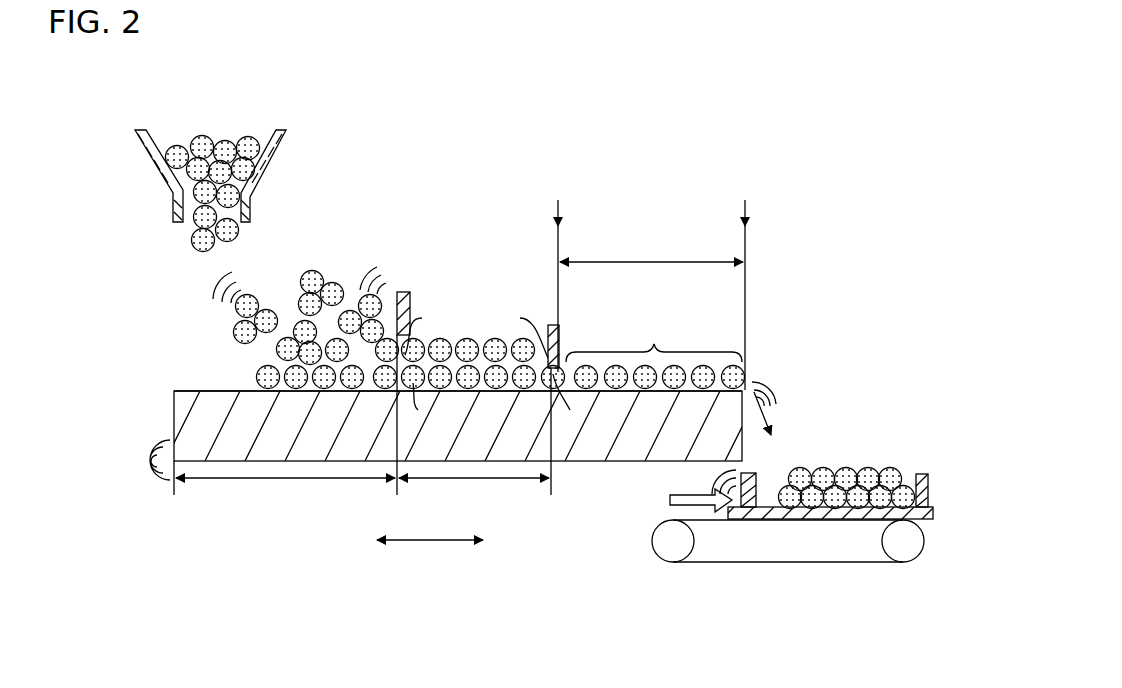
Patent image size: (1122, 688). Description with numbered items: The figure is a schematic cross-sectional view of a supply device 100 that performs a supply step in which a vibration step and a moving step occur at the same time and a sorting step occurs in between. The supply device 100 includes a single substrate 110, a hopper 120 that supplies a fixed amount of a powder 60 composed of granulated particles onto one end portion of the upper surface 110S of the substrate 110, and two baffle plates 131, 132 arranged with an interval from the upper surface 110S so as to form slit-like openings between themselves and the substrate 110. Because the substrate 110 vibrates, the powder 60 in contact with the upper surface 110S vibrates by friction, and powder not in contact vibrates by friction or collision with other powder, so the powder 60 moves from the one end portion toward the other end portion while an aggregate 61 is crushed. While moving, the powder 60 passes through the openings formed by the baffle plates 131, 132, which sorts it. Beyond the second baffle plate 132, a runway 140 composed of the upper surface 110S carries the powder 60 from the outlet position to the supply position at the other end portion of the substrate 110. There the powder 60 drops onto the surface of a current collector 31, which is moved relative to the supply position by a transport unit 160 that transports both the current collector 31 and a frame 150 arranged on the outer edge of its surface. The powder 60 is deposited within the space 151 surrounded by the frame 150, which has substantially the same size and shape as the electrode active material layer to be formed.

The supply device 100 is at (144, 98).
The powder 60 is at (252, 143).
The aggregate 61 is at (253, 295).
The hopper 120 is at (154, 160).
The baffle plate 131 is at (403, 292).
The baffle plate 132 is at (548, 325).
The substrate 110 is at (190, 405).
The upper surface 110S is at (212, 390).
The runway 140 is at (654, 341).
The space 151 is at (767, 497).
The frame 150 is at (920, 474).
The current collector 31 is at (930, 510).
The transport unit 160 is at (652, 545).